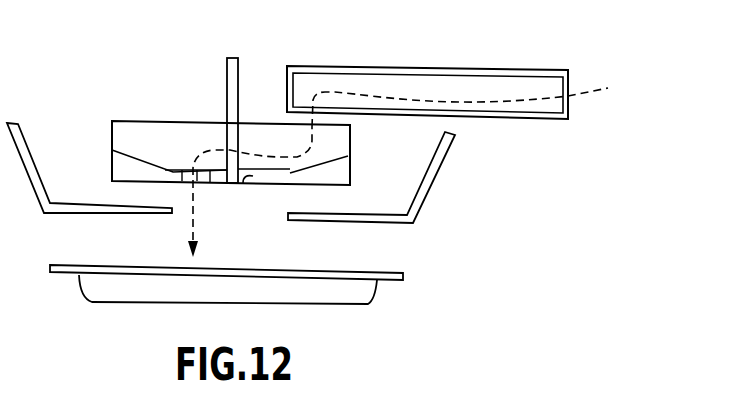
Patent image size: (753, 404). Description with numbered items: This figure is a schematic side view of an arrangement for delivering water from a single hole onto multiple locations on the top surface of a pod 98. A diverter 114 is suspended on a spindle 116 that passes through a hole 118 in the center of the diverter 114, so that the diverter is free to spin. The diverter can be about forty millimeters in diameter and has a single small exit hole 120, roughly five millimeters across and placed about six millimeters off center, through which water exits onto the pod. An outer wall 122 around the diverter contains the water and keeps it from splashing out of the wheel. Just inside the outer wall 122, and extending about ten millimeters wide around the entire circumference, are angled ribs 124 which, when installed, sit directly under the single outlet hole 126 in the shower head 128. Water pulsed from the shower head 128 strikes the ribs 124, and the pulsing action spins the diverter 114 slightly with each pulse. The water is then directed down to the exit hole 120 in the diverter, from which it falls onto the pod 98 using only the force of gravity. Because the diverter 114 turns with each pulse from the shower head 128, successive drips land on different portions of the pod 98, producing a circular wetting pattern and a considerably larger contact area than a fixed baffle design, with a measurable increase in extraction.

The pod 98 is at (368, 303).
The diverter 114 is at (112, 133).
The spindle 116 is at (227, 72).
The hole 118 is at (243, 177).
The hole 120 is at (192, 168).
The outer wall 122 is at (442, 176).
The angled ribs 124 is at (352, 173).
The outlet hole 126 is at (327, 108).
The shower head 128 is at (431, 76).